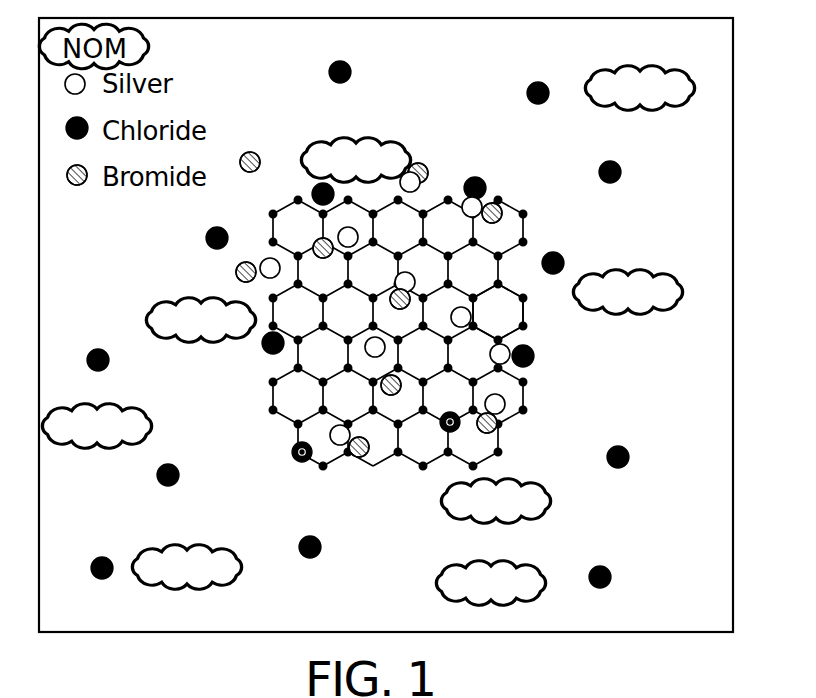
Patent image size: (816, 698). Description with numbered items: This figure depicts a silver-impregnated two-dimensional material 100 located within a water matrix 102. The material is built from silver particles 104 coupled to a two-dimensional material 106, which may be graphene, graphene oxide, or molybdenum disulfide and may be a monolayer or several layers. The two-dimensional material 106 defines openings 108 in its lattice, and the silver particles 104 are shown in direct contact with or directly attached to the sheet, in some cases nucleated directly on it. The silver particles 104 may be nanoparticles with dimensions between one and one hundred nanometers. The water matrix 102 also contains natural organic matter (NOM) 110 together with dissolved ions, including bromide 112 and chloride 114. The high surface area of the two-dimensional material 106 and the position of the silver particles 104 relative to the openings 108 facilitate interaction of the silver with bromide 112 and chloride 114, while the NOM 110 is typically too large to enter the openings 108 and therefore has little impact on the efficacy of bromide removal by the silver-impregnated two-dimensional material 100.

The silver-impregnated 2D material 100 is at (414, 489).
The water matrix 102 is at (478, 78).
The silver particles 104 is at (504, 399).
The 2D material 106 is at (497, 429).
The openings 108 is at (512, 310).
The natural organic matter (NOM) 110 is at (647, 108).
The bromide 112 is at (235, 272).
The chloride 114 is at (263, 350).